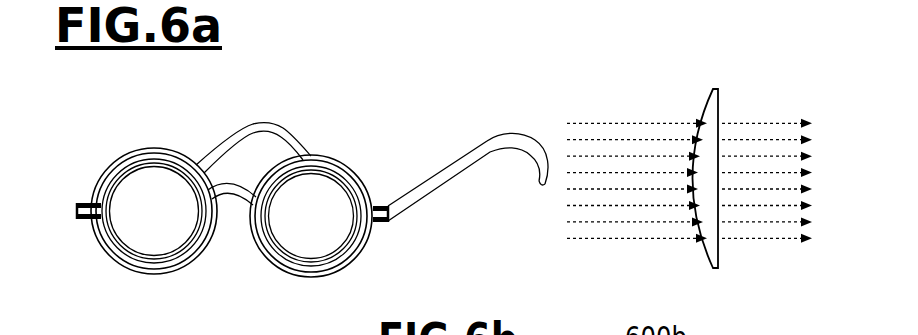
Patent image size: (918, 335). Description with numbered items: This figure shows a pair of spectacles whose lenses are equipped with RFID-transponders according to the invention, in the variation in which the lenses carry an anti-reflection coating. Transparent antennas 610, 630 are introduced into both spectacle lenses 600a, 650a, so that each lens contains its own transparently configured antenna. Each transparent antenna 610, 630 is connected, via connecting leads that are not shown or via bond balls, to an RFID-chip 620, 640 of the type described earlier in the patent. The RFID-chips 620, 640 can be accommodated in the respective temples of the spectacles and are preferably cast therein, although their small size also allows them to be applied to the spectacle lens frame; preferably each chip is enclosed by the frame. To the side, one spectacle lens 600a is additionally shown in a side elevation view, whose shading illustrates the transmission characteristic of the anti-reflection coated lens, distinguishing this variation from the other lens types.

The spectacle lens 600a is at (153, 200).
The transparent antenna 610 is at (177, 257).
The RFID-chip 620 is at (85, 189).
The transparent antenna 630 is at (275, 256).
The RFID-chip 640 is at (382, 196).
The spectacle lens 650a is at (309, 198).